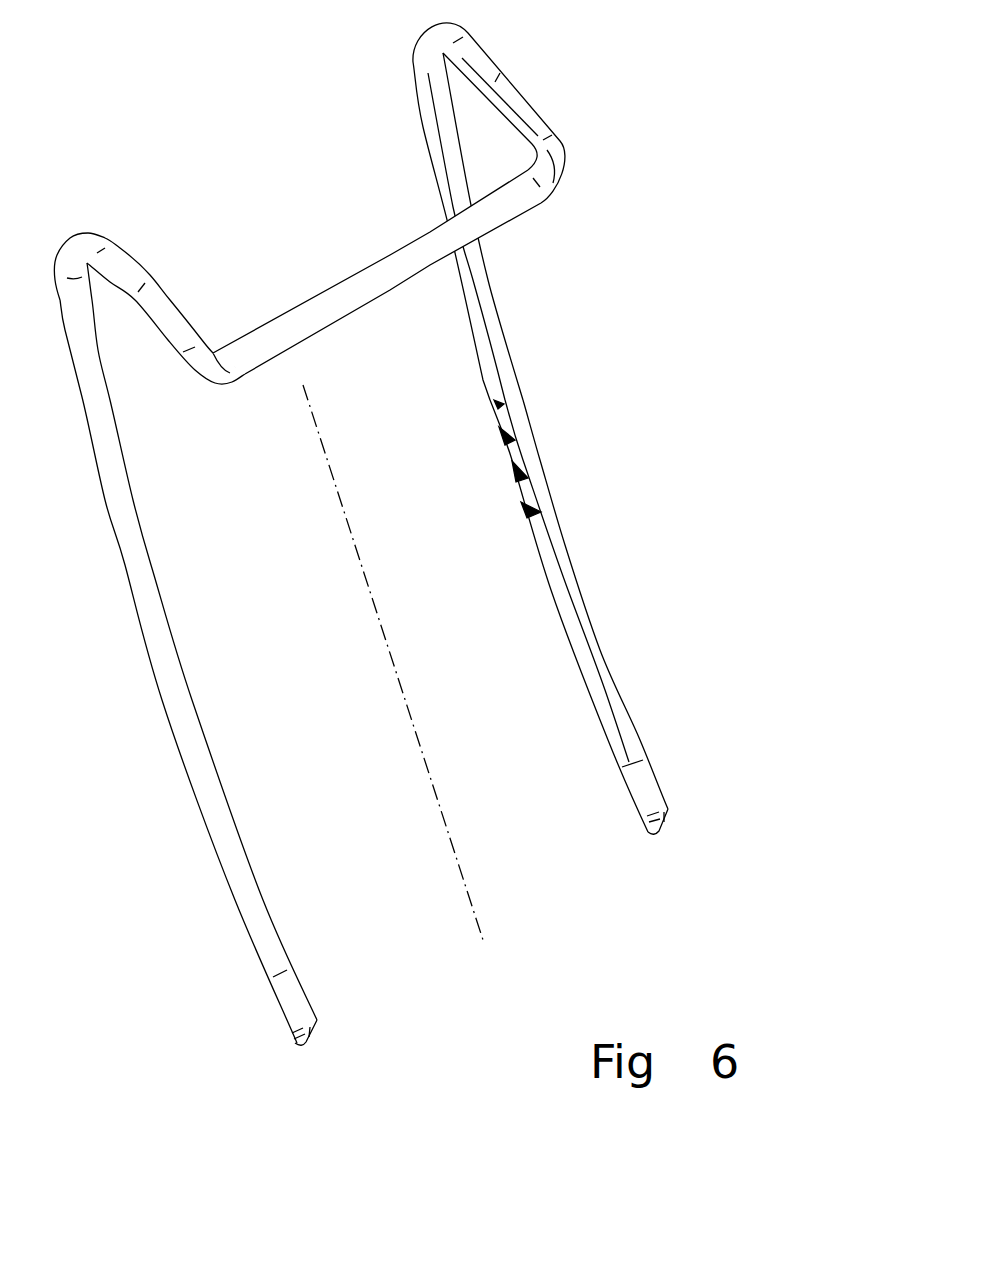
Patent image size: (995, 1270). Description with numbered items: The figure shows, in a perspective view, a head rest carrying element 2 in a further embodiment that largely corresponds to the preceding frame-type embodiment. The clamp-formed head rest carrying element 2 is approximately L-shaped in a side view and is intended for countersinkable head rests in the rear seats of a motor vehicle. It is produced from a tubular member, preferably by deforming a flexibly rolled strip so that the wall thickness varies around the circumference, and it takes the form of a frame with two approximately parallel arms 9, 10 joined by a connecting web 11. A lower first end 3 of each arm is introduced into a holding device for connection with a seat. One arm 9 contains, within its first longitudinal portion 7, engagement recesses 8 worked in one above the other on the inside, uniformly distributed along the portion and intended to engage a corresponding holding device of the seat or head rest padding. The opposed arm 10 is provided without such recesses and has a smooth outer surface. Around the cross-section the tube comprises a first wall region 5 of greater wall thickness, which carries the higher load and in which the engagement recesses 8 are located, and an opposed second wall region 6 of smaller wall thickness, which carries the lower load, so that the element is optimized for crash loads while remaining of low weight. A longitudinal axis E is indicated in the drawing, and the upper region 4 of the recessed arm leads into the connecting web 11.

The head rest carrying element 2 is at (615, 69).
The lower first end 3 is at (682, 838).
The upper leg portion 4 is at (504, 279).
The first wall region 5 is at (569, 664).
The second wall region 6 is at (622, 659).
The first longitudinal portion 7 is at (487, 389).
The engagement recesses 8 is at (512, 524).
The arm 9 is at (578, 540).
The arm 10 is at (175, 770).
The connecting web 11 is at (381, 249).
The axis E is at (443, 838).